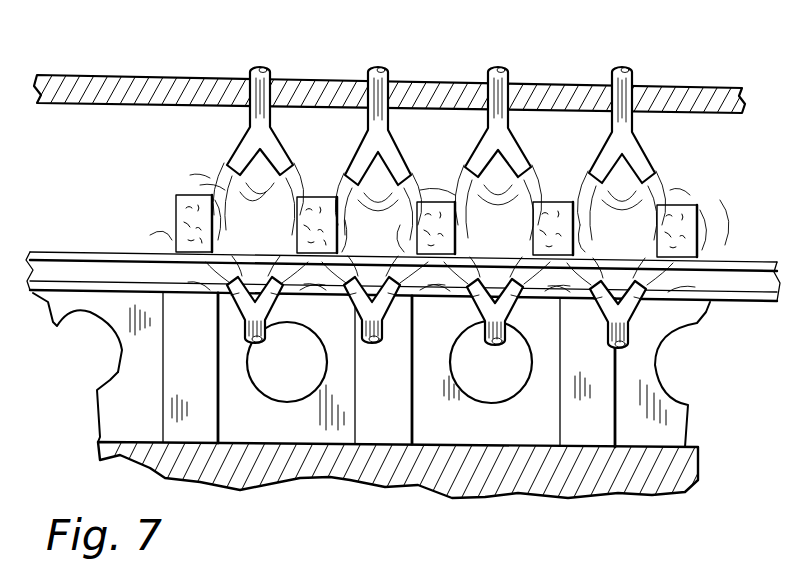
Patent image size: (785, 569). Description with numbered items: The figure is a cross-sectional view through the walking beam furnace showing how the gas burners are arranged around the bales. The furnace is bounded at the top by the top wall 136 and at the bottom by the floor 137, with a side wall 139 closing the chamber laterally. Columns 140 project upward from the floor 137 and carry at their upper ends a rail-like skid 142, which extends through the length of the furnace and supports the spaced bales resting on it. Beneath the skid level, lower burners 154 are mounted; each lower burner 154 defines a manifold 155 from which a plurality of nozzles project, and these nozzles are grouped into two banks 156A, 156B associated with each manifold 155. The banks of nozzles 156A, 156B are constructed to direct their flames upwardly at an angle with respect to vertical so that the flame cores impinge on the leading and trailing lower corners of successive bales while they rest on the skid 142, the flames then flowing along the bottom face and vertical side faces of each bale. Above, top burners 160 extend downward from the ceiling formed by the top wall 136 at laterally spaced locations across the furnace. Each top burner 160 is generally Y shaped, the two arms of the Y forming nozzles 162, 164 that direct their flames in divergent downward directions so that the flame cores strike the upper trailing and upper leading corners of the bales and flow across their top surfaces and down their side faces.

The top wall 136 is at (190, 80).
The top burner 160 is at (248, 133).
The nozzle 162 is at (203, 193).
The nozzle 164 is at (277, 162).
The skid 142 is at (98, 268).
The side wall 139 is at (180, 363).
The column 140 is at (108, 405).
The manifold 155 is at (247, 333).
The floor 137 is at (128, 460).
The lower burner 154 is at (359, 342).
The bank of nozzles 156A is at (233, 301).
The bank of nozzles 156B is at (272, 299).